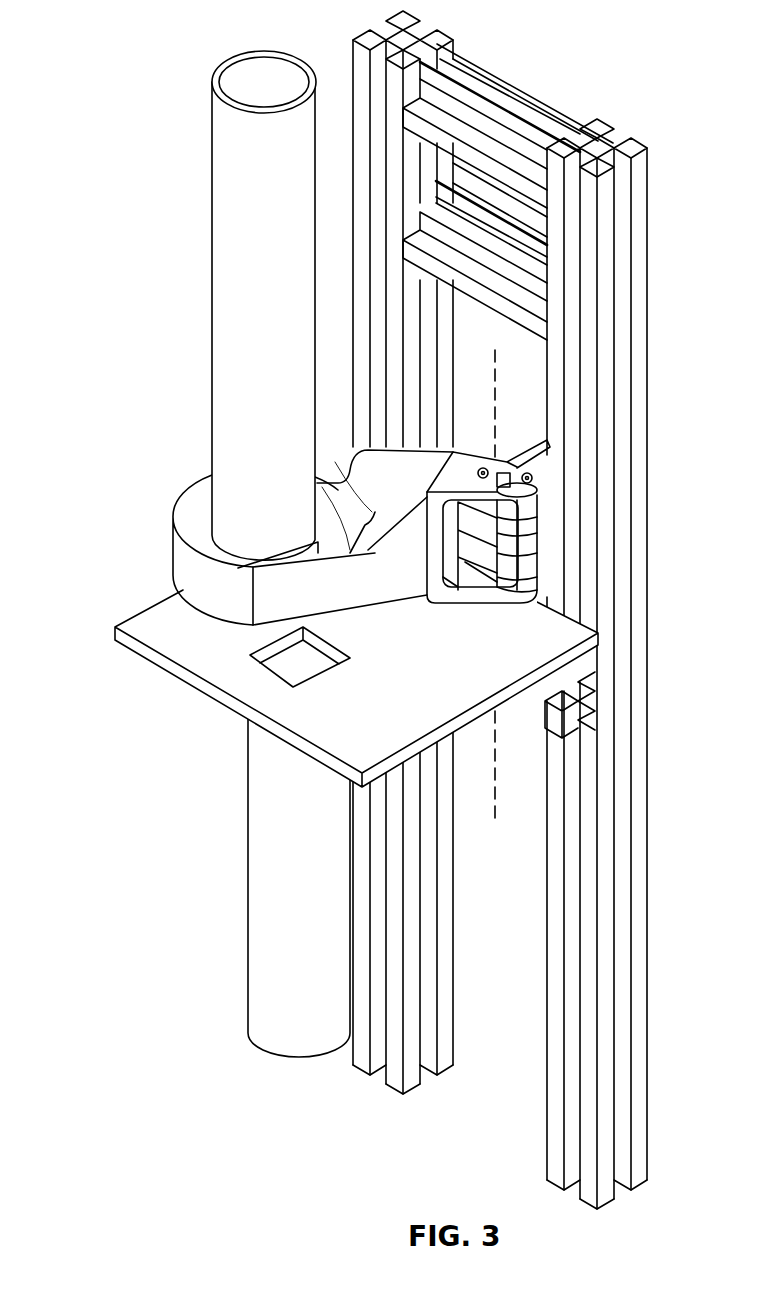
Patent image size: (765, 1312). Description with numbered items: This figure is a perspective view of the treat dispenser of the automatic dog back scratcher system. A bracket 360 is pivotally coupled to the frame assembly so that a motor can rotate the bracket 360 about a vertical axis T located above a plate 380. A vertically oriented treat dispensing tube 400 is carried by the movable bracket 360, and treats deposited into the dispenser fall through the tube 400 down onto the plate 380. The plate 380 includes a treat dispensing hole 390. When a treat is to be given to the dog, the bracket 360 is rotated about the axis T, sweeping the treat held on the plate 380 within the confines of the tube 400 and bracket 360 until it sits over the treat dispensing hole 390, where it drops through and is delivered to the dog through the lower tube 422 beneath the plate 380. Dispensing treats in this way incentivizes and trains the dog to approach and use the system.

The bracket 360 is at (387, 614).
The plate 380 is at (136, 663).
The treat dispensing hole 390 is at (275, 631).
The treat dispensing tube 400 is at (186, 226).
The lower tube 422 is at (245, 914).
The vertical axis T is at (497, 430).